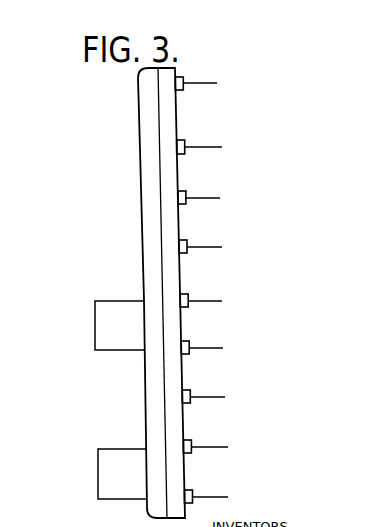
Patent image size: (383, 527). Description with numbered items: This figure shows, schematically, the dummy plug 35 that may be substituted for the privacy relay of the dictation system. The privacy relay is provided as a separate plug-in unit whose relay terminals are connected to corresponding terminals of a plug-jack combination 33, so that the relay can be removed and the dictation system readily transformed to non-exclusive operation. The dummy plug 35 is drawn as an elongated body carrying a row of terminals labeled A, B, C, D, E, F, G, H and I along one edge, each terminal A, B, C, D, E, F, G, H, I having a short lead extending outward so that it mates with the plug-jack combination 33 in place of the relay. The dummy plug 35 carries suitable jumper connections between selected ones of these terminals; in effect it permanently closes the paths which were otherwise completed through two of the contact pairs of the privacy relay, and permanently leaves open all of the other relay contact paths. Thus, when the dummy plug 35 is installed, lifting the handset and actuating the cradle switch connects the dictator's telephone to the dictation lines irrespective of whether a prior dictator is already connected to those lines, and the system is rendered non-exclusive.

The plug-jack combination 33 is at (139, 158).
The dummy plug 35 is at (173, 270).
The terminal A is at (189, 86).
The terminal B is at (192, 148).
The terminal C is at (192, 199).
The terminal D is at (193, 248).
The terminal E is at (194, 302).
The terminal F is at (195, 348).
The terminal G is at (197, 398).
The terminal H is at (199, 448).
The terminal I is at (201, 498).